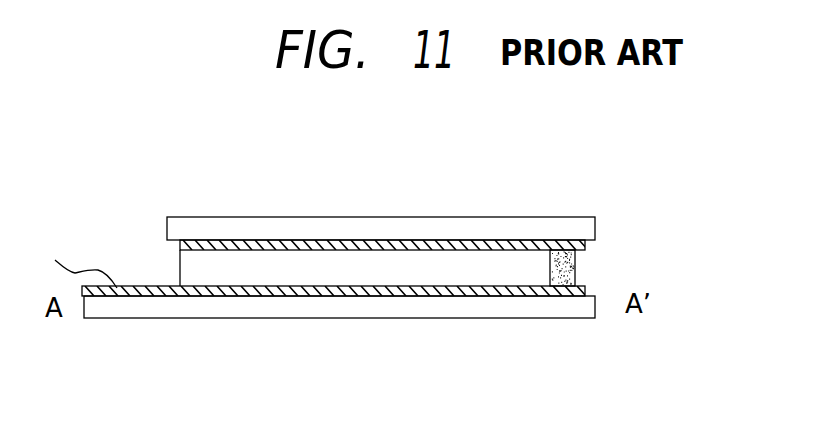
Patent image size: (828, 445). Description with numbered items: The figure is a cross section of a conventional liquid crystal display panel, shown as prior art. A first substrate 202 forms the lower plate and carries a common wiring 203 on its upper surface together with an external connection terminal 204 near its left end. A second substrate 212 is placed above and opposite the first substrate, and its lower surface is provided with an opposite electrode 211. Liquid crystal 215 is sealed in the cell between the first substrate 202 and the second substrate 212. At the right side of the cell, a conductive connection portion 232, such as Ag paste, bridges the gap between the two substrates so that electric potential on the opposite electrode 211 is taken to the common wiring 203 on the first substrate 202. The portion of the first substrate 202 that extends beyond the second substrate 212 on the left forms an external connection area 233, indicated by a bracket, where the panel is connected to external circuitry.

The first substrate 202 is at (460, 307).
The common wiring 203 is at (303, 295).
The external connection terminal 204 is at (76, 258).
The opposite electrode 211 is at (585, 250).
The second substrate 212 is at (322, 228).
The liquid crystal 215 is at (433, 257).
The conductive connection portion 232 is at (550, 268).
The external connection area 233 is at (164, 213).